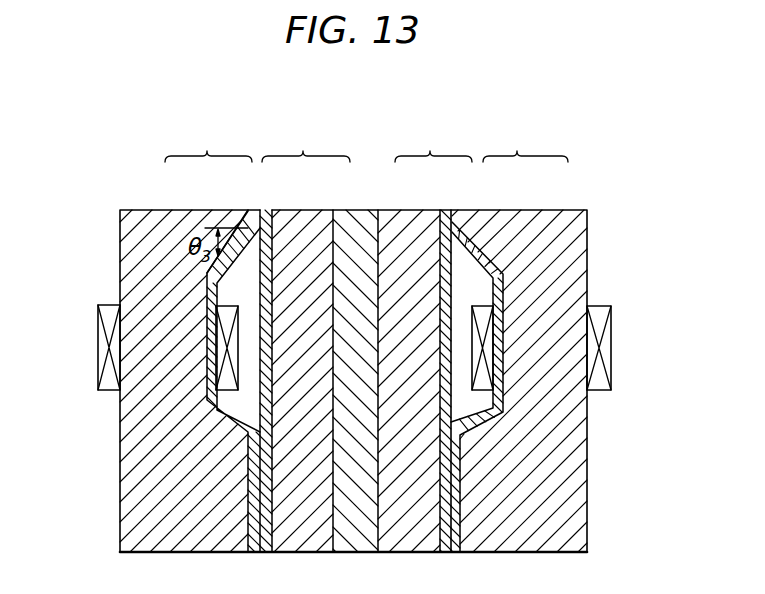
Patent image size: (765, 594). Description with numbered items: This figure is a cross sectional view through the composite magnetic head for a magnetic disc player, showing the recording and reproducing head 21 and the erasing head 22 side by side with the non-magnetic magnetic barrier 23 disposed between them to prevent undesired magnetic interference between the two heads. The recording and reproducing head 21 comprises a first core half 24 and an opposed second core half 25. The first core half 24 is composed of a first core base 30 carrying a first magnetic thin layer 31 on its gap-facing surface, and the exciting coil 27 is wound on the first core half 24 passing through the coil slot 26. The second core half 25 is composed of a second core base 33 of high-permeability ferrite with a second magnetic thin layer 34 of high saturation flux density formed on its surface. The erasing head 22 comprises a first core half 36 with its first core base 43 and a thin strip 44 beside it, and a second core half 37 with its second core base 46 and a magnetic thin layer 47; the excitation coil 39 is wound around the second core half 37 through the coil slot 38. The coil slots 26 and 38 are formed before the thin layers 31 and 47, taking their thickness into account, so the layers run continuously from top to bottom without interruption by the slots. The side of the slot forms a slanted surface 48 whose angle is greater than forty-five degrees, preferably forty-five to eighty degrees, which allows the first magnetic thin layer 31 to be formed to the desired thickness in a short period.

The recording and reproducing head 21 is at (158, 152).
The erasing head 22 is at (551, 152).
The magnetic barrier 23 is at (355, 232).
The first core half 24 is at (208, 143).
The second core half 25 is at (306, 143).
The coil slot 26 is at (214, 290).
The exciting coil 27 is at (110, 350).
The first core base 30 is at (182, 208).
The first magnetic thin layer 31 is at (253, 210).
The second core base 33 is at (312, 225).
The second magnetic thin layer 34 is at (268, 210).
The first core half 36 is at (433, 143).
The second core half 37 is at (525, 143).
The coil slot 38 is at (488, 285).
The excitation coil 39 is at (604, 352).
The first core base 43 is at (410, 230).
The thin strip 44 is at (446, 225).
The second core base 46 is at (545, 228).
The magnetic thin layer 47 is at (459, 227).
The slanted surface 48 is at (212, 268).